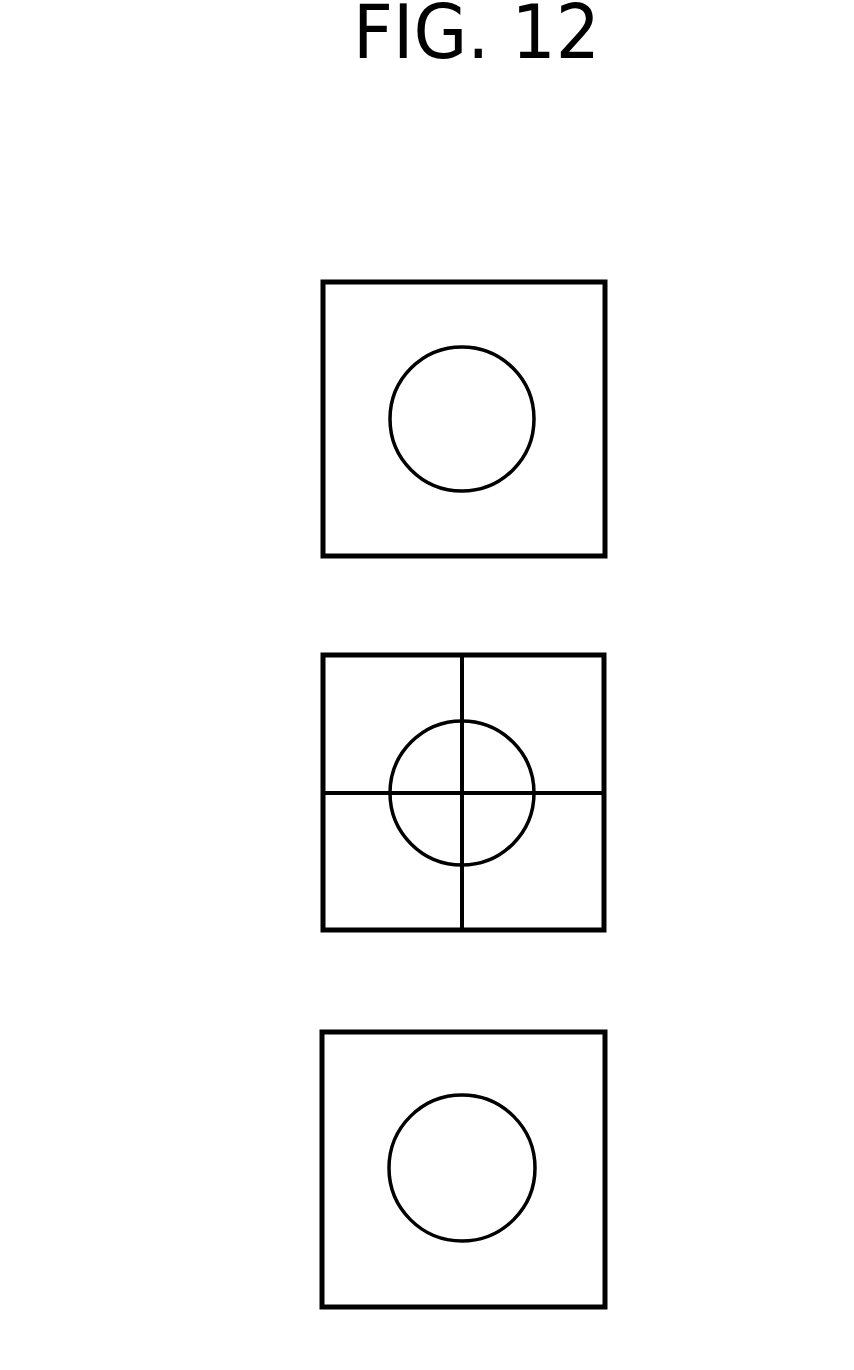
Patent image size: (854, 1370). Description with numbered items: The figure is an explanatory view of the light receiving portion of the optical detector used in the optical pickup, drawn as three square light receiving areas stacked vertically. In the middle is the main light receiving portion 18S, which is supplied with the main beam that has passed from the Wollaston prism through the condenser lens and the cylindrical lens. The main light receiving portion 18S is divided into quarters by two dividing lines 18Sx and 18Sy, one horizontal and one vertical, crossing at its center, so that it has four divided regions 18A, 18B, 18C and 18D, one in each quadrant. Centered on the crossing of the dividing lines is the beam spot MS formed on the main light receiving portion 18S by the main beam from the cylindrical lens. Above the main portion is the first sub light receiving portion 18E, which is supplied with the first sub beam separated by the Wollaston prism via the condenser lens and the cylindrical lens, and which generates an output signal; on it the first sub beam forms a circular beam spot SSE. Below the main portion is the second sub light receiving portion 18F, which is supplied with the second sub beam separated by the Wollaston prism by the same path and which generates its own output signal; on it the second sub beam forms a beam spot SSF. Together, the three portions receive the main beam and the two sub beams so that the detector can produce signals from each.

The first sub light receiving portion 18E is at (348, 393).
The beam spot SSE is at (534, 396).
The main light receiving portion 18S is at (406, 787).
The divided region 18A is at (348, 727).
The divided region 18B is at (350, 848).
The divided region 18C is at (509, 909).
The divided region 18D is at (505, 680).
The dividing line 18Sx is at (573, 793).
The dividing line 18Sy is at (463, 885).
The beam spot MS is at (520, 747).
The second sub light receiving portion 18F is at (348, 1111).
The beam spot SSF is at (533, 1145).